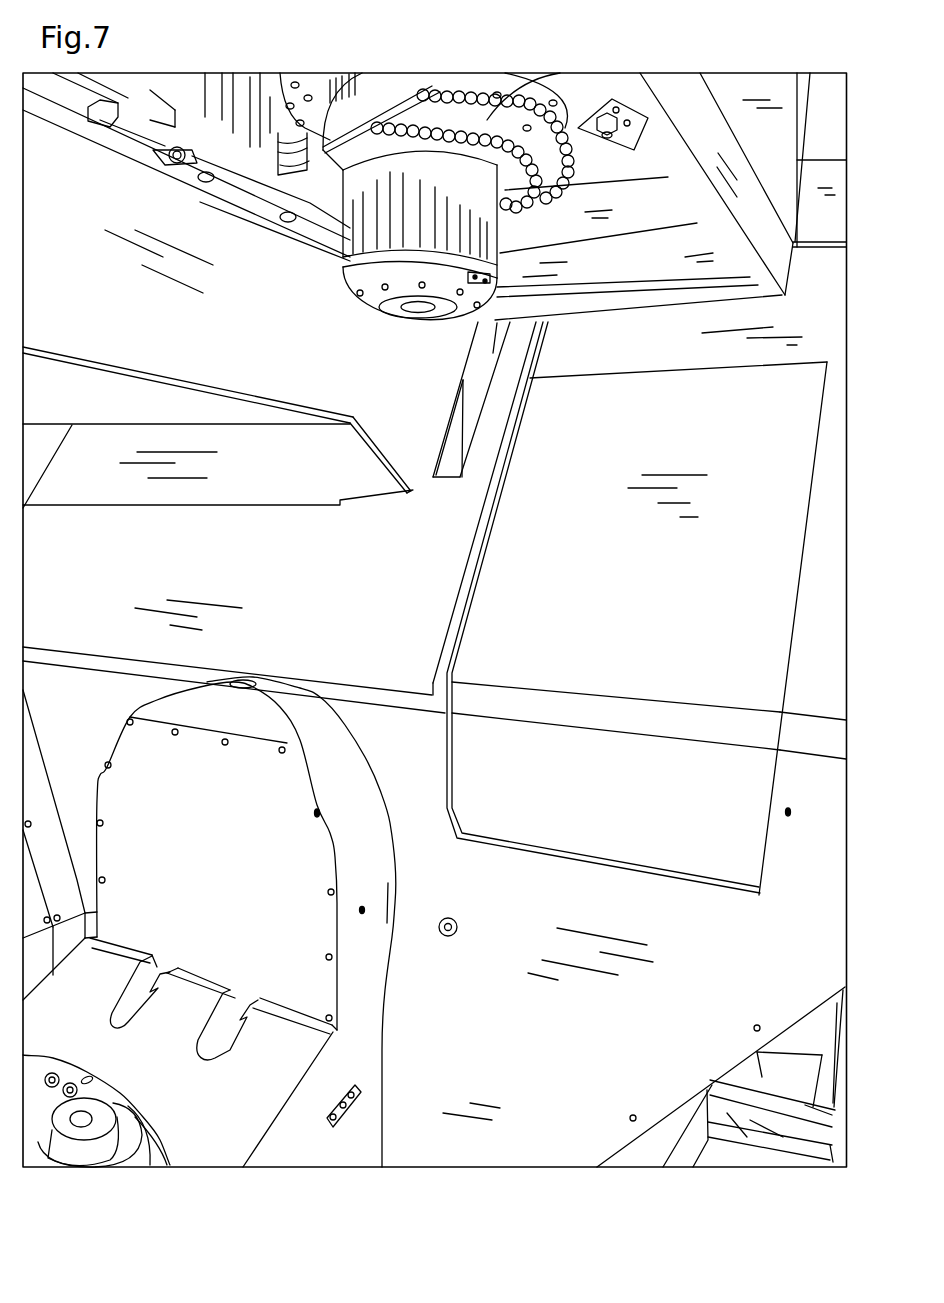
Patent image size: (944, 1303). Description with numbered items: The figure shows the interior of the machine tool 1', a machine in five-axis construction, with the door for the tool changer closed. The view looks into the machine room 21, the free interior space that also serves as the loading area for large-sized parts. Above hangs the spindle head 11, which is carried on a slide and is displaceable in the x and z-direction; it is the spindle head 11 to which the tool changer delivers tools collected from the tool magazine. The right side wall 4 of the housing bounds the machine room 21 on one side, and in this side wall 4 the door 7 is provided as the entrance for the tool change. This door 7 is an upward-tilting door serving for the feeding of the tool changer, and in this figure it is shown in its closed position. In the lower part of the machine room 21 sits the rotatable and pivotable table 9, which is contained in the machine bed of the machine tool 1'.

The spindle head 11 is at (435, 168).
The machine room 21 is at (299, 578).
The side wall 4 is at (83, 721).
The door 7 is at (599, 795).
The rotatable and pivotable table 9 is at (233, 1090).
The machine tool 1' is at (35, 572).